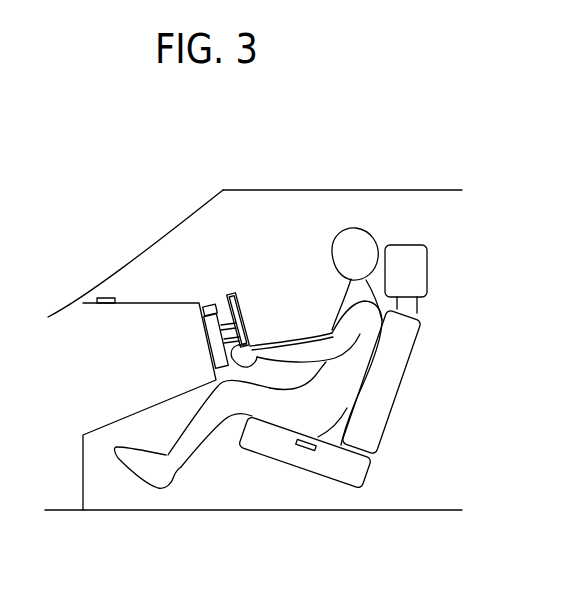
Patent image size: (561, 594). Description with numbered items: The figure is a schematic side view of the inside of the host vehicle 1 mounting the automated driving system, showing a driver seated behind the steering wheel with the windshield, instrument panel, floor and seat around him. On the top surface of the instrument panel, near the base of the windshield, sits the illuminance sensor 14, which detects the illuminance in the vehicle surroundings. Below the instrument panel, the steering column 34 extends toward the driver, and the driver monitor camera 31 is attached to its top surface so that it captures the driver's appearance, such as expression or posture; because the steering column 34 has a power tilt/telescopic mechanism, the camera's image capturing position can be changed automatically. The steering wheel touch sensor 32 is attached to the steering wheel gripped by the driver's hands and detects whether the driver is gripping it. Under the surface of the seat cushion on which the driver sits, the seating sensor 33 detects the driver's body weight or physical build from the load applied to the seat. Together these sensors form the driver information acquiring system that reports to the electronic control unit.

The host vehicle 1 is at (396, 158).
The illuminance sensor 14 is at (111, 298).
The driver monitor camera 31 is at (210, 304).
The steering wheel touch sensor 32 is at (250, 305).
The seating sensor 33 is at (300, 450).
The steering column 34 is at (204, 304).